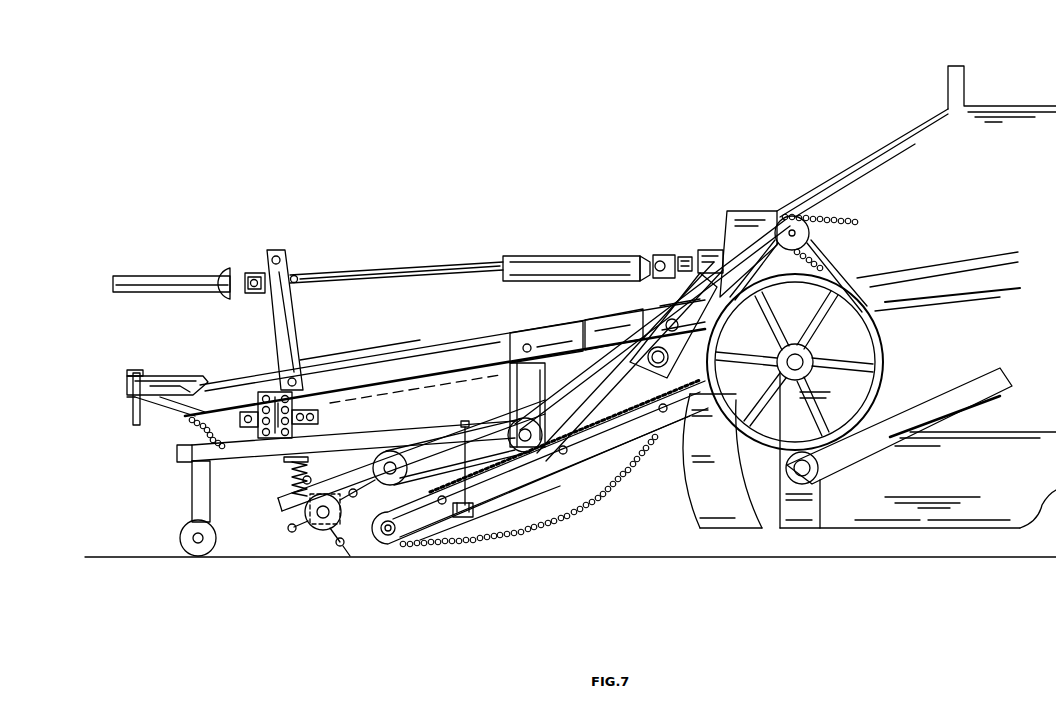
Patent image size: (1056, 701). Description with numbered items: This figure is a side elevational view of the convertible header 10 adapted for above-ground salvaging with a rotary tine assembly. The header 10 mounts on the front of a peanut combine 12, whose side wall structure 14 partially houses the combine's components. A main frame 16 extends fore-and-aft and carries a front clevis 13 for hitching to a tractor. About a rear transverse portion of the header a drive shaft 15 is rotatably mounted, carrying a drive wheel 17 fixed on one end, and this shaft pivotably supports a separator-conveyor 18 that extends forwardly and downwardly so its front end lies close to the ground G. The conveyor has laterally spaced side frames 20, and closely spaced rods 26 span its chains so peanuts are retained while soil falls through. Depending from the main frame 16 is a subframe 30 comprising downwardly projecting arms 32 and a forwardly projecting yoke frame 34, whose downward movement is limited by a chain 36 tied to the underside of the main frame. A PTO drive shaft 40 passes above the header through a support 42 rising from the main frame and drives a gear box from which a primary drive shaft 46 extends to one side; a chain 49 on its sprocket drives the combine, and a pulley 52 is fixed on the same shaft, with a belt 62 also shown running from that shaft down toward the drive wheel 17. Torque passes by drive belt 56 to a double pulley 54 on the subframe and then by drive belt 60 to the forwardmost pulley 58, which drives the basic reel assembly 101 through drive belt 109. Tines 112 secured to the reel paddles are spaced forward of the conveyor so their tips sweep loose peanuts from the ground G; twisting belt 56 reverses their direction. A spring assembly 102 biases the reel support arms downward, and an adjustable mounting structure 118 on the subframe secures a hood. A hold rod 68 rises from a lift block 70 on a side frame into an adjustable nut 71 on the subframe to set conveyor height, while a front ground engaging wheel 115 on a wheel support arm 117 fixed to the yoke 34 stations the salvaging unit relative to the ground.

The ground G is at (118, 558).
The convertible header 10 is at (406, 232).
The peanut combine 12 is at (977, 64).
The front clevis 13 is at (180, 373).
The side wall structure 14 is at (869, 320).
The drive shaft 15 is at (802, 363).
The main frame 16 is at (602, 334).
The drive wheel 17 is at (883, 384).
The separator-conveyor 18 is at (585, 520).
The side frames 20 is at (540, 462).
The rods 26 is at (496, 545).
The subframe 30 is at (122, 413).
The arms 32 is at (527, 405).
The yoke frame 34 is at (176, 457).
The chain 36 is at (186, 426).
The PTO drive shaft 40 is at (318, 275).
The support 42 is at (292, 339).
The primary drive shaft 46 is at (797, 233).
The chain 49 is at (842, 215).
The pulley 52 is at (802, 248).
The double pulley 54 is at (546, 420).
The drive belt 56 is at (600, 406).
The pulley 58 is at (410, 446).
The drive belt 60 is at (484, 425).
The drive belt 62 is at (830, 268).
The hold rod 68 is at (458, 463).
The lift block 70 is at (476, 505).
The adjustable nut 71 is at (474, 437).
The basic reel assembly 101 is at (330, 525).
The spring assembly 102 is at (290, 476).
The drive belt 109 is at (375, 443).
The tines 112 is at (312, 456).
The front ground engaging wheel 115 is at (180, 538).
The wheel support arm 117 is at (211, 506).
The adjustable mounting structure 118 is at (322, 413).